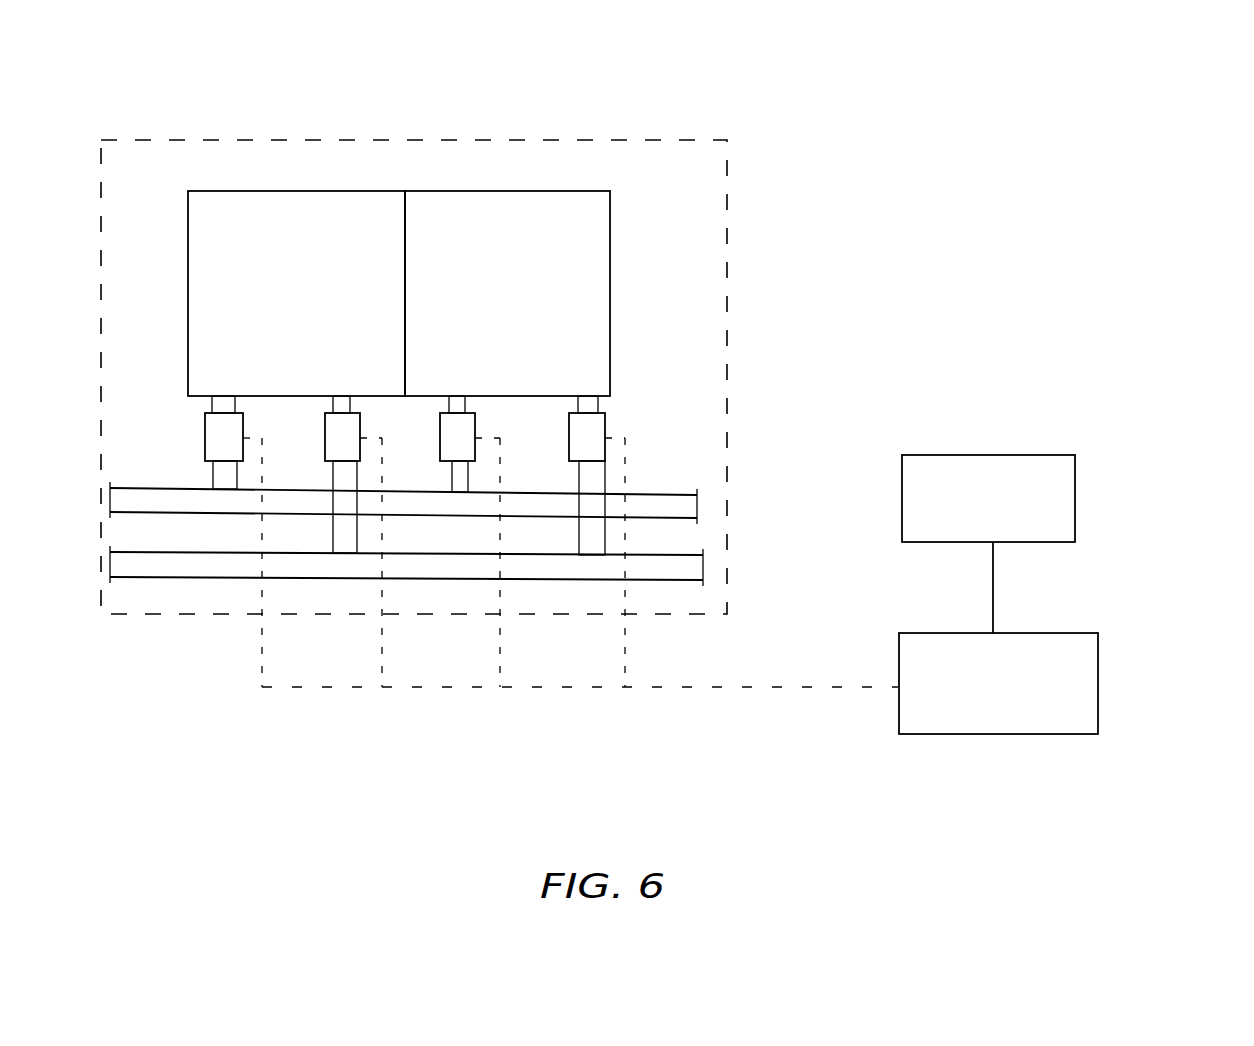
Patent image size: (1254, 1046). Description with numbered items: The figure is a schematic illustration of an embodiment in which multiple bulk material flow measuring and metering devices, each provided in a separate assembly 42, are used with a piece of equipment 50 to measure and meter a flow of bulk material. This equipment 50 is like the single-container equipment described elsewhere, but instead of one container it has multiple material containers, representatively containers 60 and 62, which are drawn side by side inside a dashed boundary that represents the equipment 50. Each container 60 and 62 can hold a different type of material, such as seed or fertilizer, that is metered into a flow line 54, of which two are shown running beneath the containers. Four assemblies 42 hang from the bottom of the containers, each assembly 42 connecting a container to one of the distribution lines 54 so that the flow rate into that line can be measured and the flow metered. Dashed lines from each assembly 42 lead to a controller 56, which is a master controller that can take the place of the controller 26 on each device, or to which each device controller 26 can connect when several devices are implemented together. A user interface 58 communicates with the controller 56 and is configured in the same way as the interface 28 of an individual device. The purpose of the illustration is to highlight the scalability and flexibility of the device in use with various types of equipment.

The equipment 50 is at (649, 139).
The material container 60 is at (295, 225).
The material container 62 is at (513, 218).
The assembly 42 is at (215, 436).
The distribution line 54 is at (163, 500).
The user interface 58 is at (1048, 544).
The interface 28 is at (1076, 500).
The controller 56 is at (1060, 683).
The controller 26 is at (1099, 690).